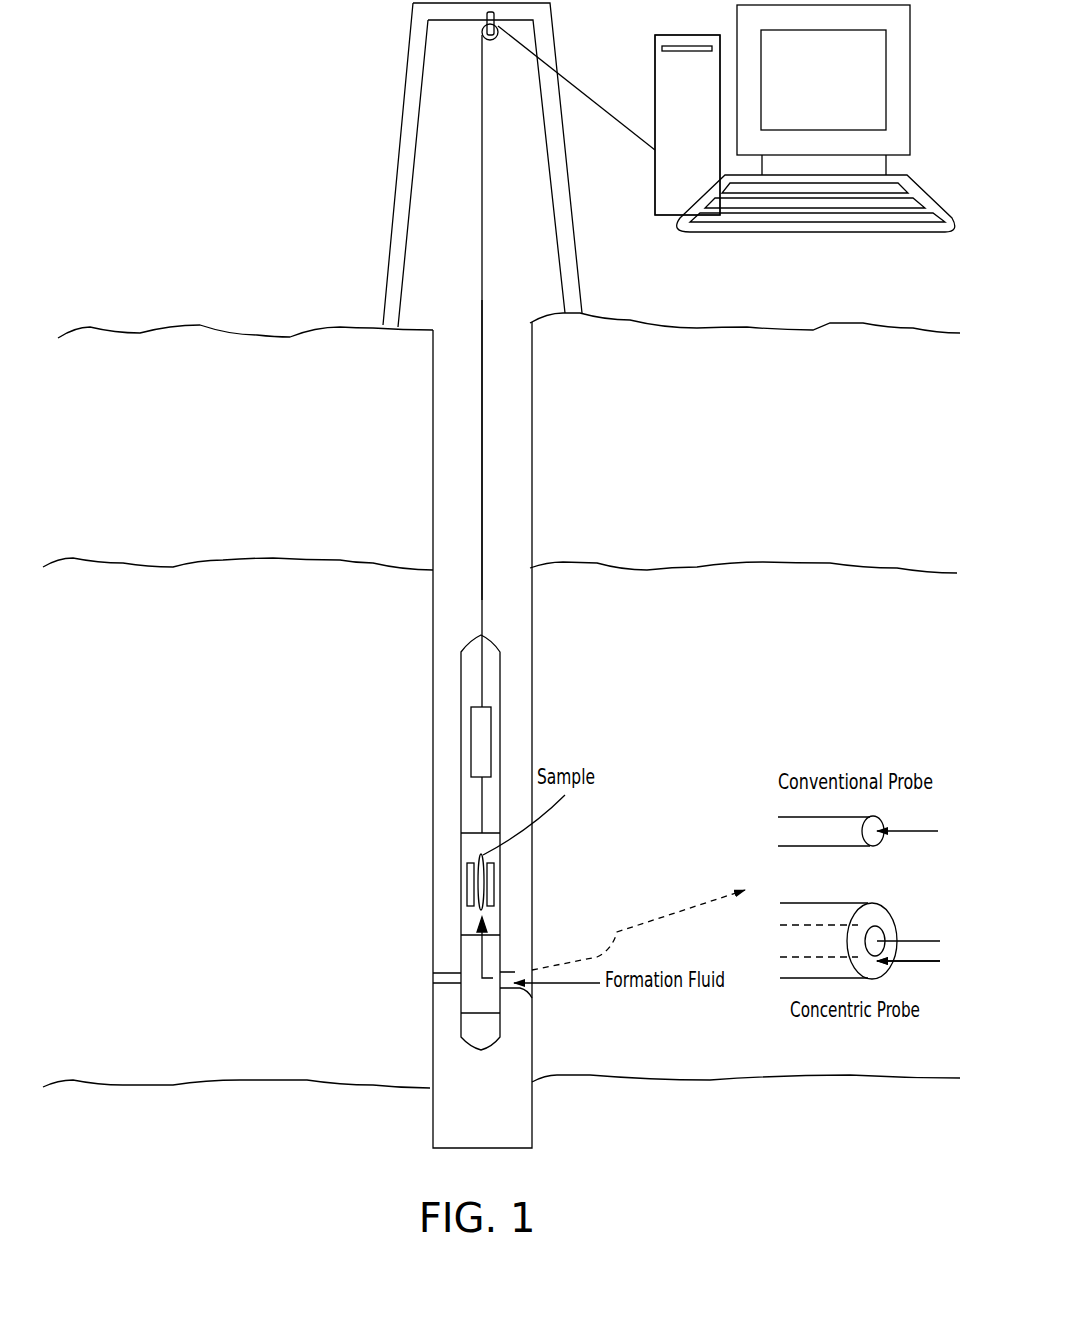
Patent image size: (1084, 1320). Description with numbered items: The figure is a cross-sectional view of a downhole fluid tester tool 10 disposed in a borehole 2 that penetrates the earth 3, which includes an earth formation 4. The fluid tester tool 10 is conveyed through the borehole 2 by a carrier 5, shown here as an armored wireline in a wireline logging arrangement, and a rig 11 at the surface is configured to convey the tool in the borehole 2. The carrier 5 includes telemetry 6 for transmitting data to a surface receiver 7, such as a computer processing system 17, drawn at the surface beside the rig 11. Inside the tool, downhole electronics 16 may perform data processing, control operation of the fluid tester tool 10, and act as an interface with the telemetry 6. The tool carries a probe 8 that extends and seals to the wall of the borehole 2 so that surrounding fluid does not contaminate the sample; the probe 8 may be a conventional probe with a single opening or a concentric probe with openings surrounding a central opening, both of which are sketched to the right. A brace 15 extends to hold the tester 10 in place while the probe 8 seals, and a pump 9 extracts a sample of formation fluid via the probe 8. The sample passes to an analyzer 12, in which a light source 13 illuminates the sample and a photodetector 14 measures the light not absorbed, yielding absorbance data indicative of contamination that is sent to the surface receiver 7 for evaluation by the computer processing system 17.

The borehole 2 is at (433, 397).
The earth 3 is at (860, 391).
The earth formation 4 is at (878, 643).
The carrier 5 is at (482, 475).
The telemetry 6 is at (482, 503).
The surface receiver 7 is at (655, 65).
The computer processing system 17 is at (687, 125).
The probe 8 is at (510, 975).
The pump 9 is at (472, 1000).
The downhole fluid tester tool 10 is at (461, 683).
The rig 11 is at (410, 133).
The analyzer 12 is at (468, 843).
The light source 13 is at (467, 884).
The photodetector 14 is at (492, 883).
The brace 15 is at (445, 978).
The downhole electronics 16 is at (481, 728).